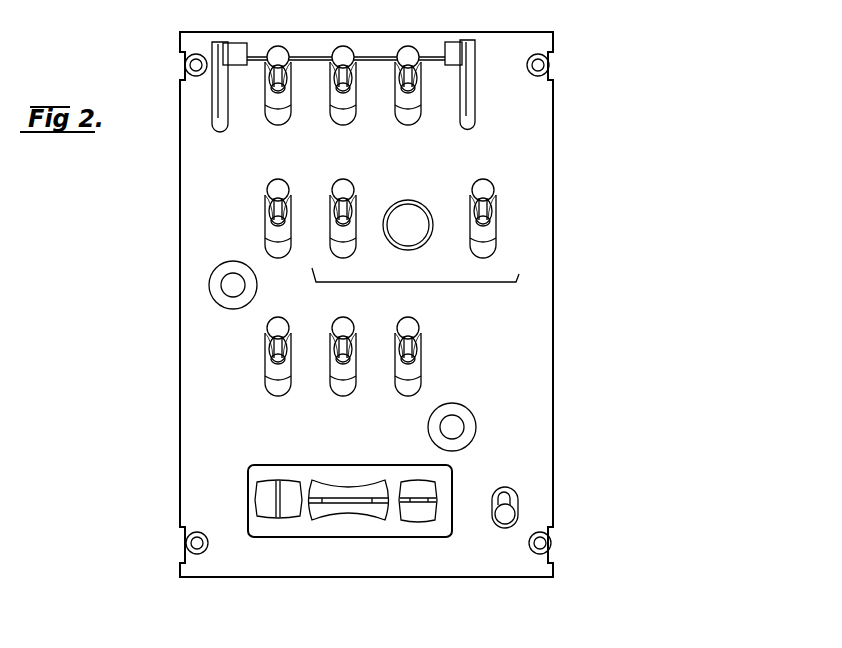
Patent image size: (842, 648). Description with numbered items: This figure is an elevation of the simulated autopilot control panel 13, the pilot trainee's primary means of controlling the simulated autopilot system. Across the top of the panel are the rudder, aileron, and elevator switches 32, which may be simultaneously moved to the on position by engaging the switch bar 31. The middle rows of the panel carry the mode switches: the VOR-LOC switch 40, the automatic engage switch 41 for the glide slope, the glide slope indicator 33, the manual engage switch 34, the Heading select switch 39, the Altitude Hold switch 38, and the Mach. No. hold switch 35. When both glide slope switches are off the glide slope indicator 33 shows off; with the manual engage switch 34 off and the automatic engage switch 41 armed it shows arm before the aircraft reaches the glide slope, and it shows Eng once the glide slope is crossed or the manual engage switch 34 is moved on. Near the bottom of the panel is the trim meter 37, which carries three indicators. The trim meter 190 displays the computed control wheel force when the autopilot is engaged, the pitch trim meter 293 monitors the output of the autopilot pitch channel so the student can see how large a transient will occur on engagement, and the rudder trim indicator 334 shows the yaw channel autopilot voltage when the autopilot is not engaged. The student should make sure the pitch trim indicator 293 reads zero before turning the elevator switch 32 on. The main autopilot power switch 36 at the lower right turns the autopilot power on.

The autopilot control panel 13 is at (553, 105).
The engaging switch bar 31 is at (240, 43).
The rudder, aileron, and elevator switches 32 is at (398, 55).
The glide slope indicator 33 is at (410, 210).
The manual engage switch 34 is at (491, 193).
The Mach. No. hold switch 35 is at (416, 330).
The main autopilot power switch 36 is at (515, 515).
The trim meter 37 is at (356, 526).
The Altitude Hold switch 38 is at (336, 326).
The Heading select switch 39 is at (268, 330).
The VOR-LOC switch 40 is at (270, 186).
The automatic engage switch 41 is at (333, 185).
The trim meter 190 is at (330, 487).
The pitch trim meter 293 is at (421, 515).
The rudder trim indicator 334 is at (267, 490).